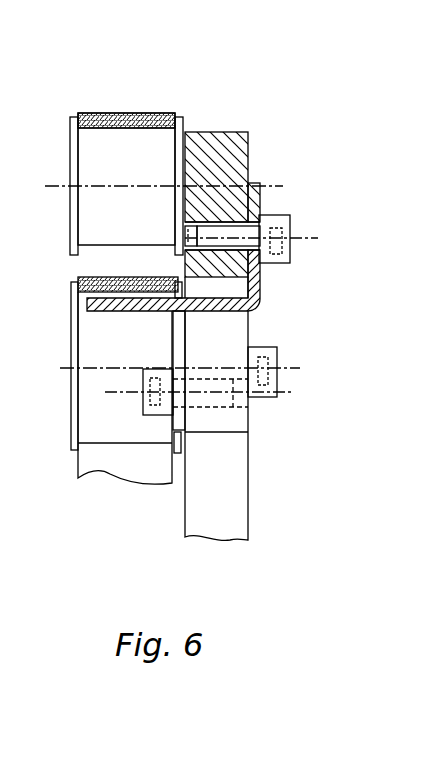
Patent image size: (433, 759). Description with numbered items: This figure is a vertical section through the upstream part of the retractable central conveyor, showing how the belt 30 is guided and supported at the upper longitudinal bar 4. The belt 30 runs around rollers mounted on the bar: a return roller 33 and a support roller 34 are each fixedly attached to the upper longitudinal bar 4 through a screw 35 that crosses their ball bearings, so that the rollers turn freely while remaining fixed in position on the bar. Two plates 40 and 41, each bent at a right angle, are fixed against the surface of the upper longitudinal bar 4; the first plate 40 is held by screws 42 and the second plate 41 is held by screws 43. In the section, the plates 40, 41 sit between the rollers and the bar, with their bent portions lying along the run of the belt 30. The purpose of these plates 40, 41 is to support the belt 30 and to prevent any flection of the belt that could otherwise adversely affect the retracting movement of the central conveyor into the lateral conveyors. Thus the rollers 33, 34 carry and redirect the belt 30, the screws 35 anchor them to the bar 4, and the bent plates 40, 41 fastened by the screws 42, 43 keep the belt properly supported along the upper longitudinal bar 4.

The upper longitudinal bar 4 is at (225, 155).
The belt 30 is at (158, 128).
The return roller 33 is at (96, 420).
The support roller 34 is at (107, 160).
The screw 35 is at (257, 380).
The plate 40 is at (255, 292).
The plate 41 is at (177, 330).
The screw 42 is at (268, 218).
The screw 43 is at (163, 405).